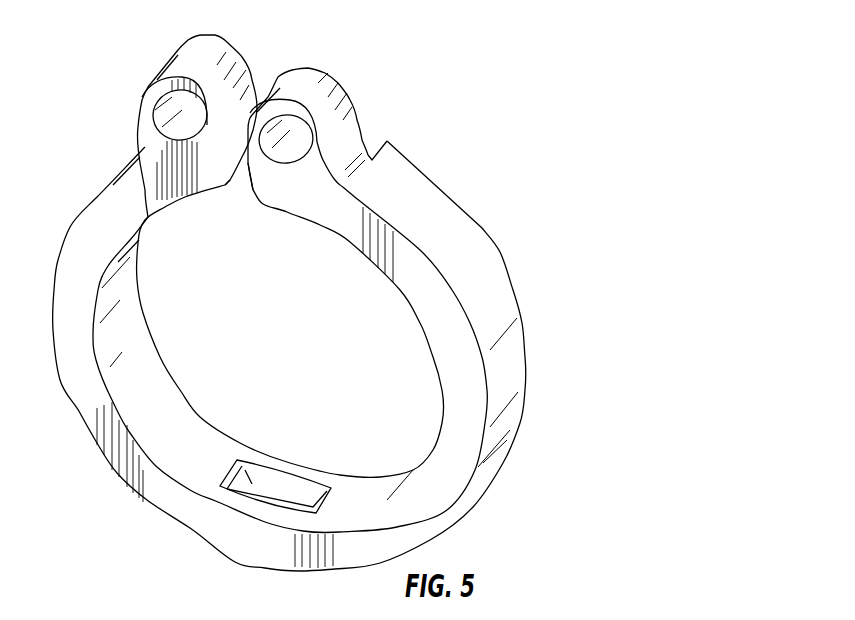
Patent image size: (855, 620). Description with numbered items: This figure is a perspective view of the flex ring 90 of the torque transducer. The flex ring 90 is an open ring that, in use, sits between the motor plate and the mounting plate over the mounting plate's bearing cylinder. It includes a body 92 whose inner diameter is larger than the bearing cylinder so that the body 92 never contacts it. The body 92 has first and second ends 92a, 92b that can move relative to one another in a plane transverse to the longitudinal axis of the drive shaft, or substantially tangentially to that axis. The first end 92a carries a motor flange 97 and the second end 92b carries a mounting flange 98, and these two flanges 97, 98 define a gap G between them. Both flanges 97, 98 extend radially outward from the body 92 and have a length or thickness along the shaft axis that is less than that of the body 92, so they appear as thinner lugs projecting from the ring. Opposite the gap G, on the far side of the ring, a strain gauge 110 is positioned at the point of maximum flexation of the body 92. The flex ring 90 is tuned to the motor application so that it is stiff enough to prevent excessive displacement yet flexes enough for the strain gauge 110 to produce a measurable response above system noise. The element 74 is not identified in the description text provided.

The flex ring 90 is at (562, 355).
The body 92 is at (480, 270).
The first end 92a is at (140, 185).
The second end 92b is at (373, 156).
The outer surface of ring 74 is at (420, 190).
The motor flange 97 is at (197, 52).
The mounting flange 98 is at (302, 80).
The gap G is at (247, 180).
The strain gauge 110 is at (258, 512).